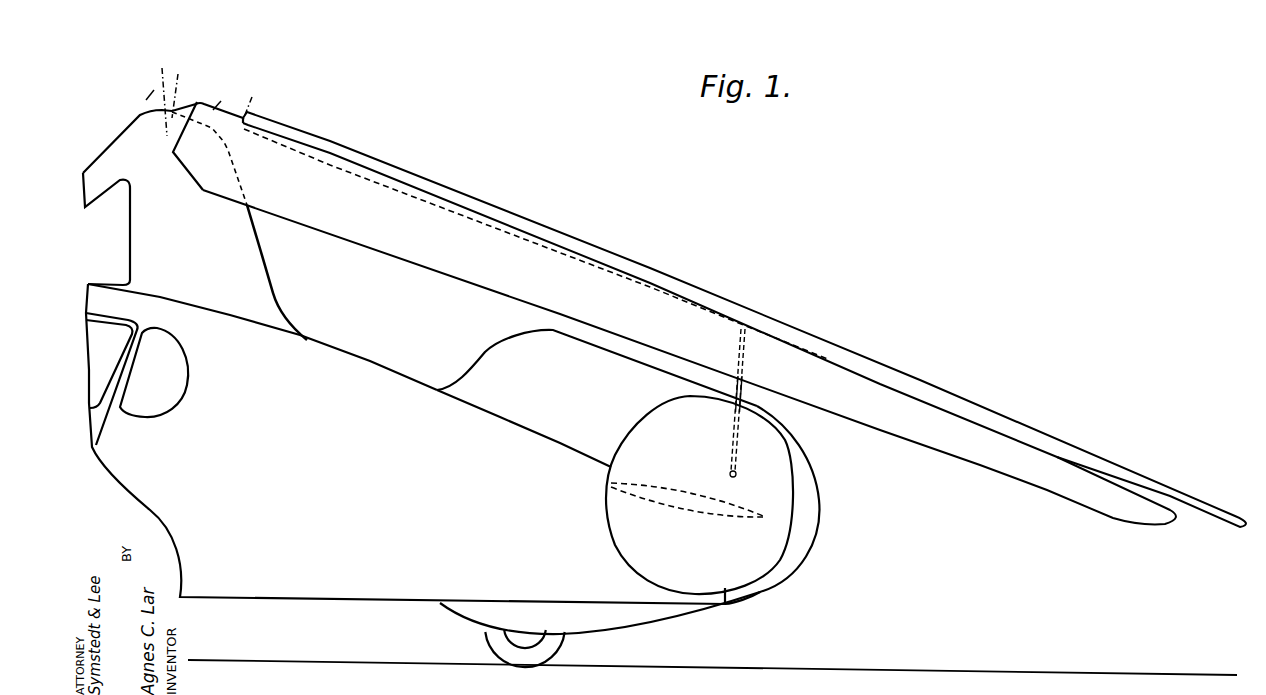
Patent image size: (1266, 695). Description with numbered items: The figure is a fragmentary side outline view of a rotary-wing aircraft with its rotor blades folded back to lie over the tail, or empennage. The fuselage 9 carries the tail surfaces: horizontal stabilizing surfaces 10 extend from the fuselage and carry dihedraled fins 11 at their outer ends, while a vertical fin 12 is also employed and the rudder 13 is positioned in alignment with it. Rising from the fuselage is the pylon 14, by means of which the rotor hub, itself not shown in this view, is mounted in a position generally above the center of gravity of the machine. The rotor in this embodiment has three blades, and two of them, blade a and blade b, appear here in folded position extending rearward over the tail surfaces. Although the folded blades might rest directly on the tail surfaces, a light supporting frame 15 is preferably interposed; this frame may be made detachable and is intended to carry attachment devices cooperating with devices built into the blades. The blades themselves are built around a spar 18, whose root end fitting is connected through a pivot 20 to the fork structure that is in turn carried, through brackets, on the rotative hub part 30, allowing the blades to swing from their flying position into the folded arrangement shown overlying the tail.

The fuselage 9 is at (660, 388).
The horizontal stabilizing surfaces 10 is at (663, 503).
The dihedraled fins 11 is at (778, 501).
The vertical fin 12 is at (492, 360).
The rudder 13 is at (803, 465).
The pylon 14 is at (242, 253).
The supporting frame 15 is at (744, 407).
The spar 18 is at (207, 94).
The pivot 20 is at (170, 107).
The rotative hub part 30 is at (180, 83).
The blade a is at (432, 263).
The blade b is at (690, 289).